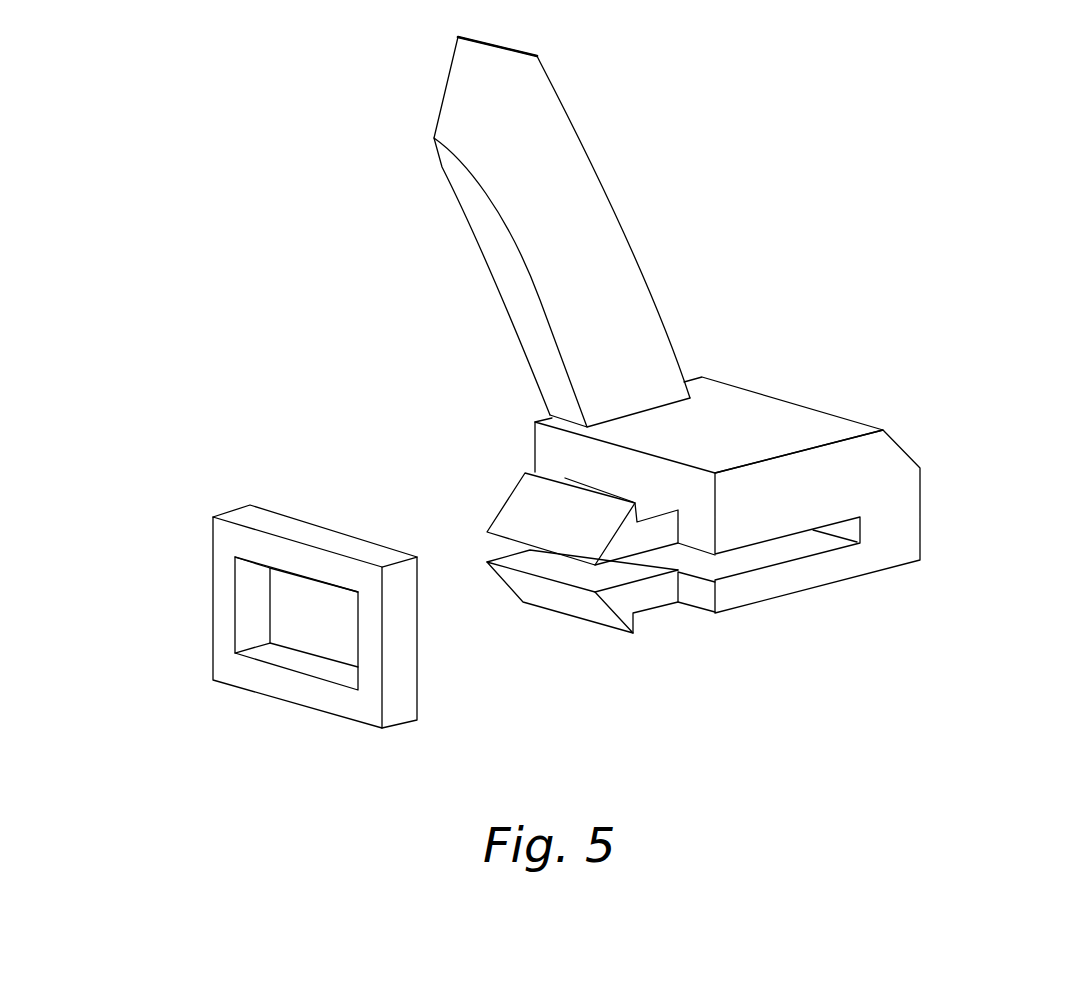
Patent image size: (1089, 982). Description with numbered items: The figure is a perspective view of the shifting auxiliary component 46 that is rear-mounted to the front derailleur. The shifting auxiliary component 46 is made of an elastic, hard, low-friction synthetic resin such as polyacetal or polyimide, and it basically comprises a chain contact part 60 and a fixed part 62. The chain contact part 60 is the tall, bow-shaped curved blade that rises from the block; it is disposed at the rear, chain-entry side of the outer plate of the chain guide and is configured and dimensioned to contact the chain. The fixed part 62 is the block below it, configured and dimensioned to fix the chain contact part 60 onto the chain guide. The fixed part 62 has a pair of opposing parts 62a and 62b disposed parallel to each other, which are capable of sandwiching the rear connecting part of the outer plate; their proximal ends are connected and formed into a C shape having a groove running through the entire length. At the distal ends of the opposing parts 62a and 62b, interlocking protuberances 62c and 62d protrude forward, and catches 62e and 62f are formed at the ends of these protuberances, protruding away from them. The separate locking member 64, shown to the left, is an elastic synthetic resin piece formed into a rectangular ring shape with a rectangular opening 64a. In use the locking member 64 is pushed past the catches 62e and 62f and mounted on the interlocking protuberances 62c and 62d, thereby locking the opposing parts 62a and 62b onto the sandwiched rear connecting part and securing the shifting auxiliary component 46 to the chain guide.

The shifting auxiliary component 46 is at (707, 262).
The chain contact part 60 is at (643, 330).
The fixed part 62 is at (938, 477).
The opposing part 62a is at (777, 497).
The opposing part 62b is at (805, 597).
The interlocking protuberance 62c is at (532, 502).
The interlocking protuberance 62d is at (582, 612).
The catch 62e is at (633, 517).
The catch 62f is at (636, 627).
The locking member 64 is at (303, 715).
The rectangular opening 64a is at (252, 608).